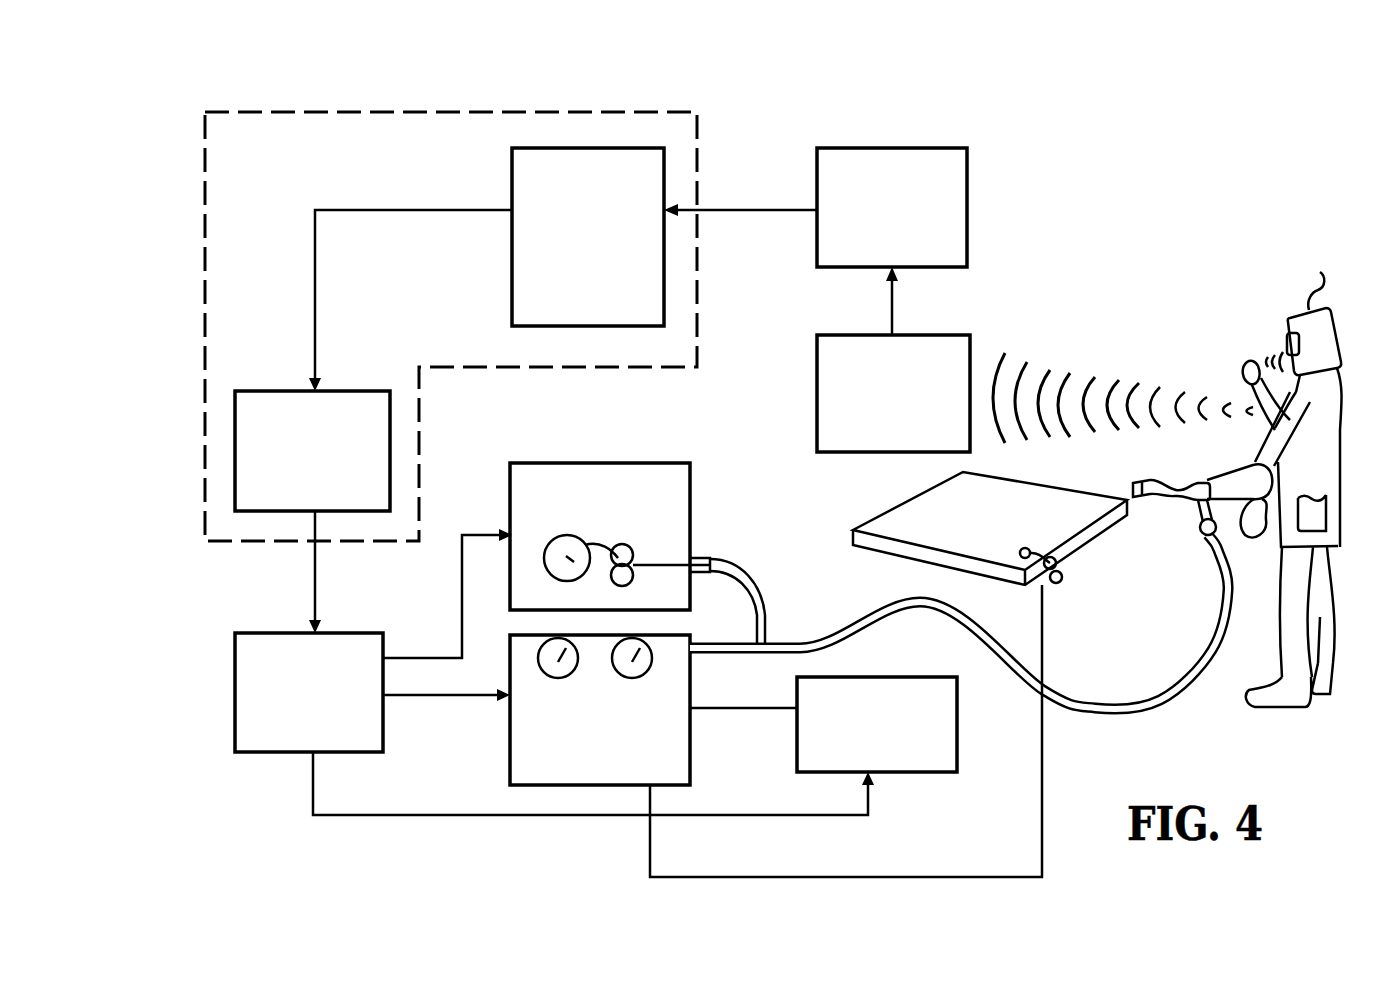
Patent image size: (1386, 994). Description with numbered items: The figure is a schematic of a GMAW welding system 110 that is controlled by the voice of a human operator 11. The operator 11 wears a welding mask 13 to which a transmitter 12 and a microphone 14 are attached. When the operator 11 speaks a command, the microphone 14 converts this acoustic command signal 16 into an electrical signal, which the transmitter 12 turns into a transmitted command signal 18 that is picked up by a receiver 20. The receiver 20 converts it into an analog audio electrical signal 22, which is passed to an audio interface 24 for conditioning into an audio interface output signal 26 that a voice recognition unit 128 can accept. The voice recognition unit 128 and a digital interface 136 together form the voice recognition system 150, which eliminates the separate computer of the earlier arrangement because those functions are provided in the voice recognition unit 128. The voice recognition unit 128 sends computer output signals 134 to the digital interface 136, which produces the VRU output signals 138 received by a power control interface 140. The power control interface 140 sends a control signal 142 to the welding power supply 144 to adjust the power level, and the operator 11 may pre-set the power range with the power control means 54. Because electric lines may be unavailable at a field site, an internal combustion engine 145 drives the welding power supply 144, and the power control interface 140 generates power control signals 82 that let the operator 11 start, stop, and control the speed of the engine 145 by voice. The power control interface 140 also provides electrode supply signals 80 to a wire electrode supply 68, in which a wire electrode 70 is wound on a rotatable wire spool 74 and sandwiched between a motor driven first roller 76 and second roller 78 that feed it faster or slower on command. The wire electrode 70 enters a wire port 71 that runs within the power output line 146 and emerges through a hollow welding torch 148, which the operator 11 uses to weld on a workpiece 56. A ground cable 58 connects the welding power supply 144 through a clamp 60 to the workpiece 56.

The human operator 11 is at (1340, 425).
The transmitter 12 is at (1250, 445).
The welding mask 13 is at (1320, 272).
The microphone 14 is at (1245, 368).
The acoustic command signal 16 is at (1278, 348).
The transmitted command signal 18 is at (1134, 386).
The receiver 20 is at (817, 358).
The analog audio electrical signal 22 is at (893, 312).
The audio interface 24 is at (967, 182).
The audio interface output signal 26 is at (738, 210).
The power control means 54 is at (630, 678).
The workpiece 56 is at (994, 533).
The ground cable 58 is at (978, 852).
The clamp 60 is at (1062, 580).
The wire electrode supply 68 is at (690, 497).
The wire electrode 70 is at (674, 565).
The wire port 71 is at (767, 638).
The wire spool 74 is at (580, 537).
The first roller 76 is at (622, 544).
The second roller 78 is at (633, 580).
The electrode supply signals 80 is at (462, 600).
The power control signals 82 is at (448, 815).
The GMAW welding system 110 is at (1146, 305).
The voice recognition unit 128 is at (513, 272).
The computer output signals 134 is at (410, 210).
The digital interface 136 is at (347, 391).
The VRU output signals 138 is at (317, 600).
The power control interface 140 is at (282, 618).
The control signal 142 is at (430, 700).
The welding power supply 144 is at (510, 757).
The internal combustion engine 145 is at (958, 762).
The power output line 146 is at (1112, 716).
The welding torch 148 is at (762, 706).
The voice recognition system 150 is at (462, 368).